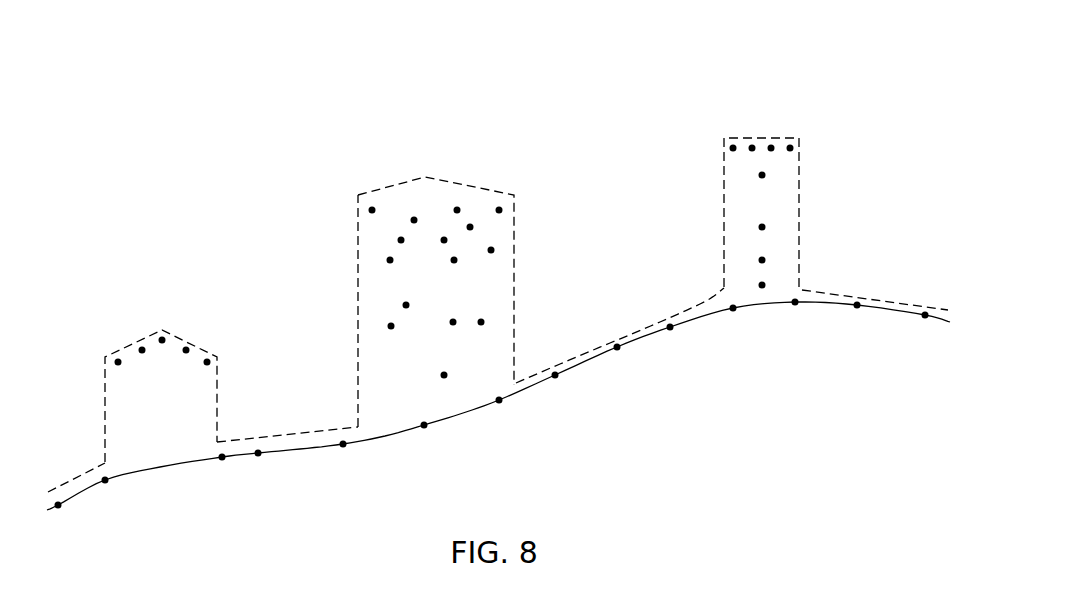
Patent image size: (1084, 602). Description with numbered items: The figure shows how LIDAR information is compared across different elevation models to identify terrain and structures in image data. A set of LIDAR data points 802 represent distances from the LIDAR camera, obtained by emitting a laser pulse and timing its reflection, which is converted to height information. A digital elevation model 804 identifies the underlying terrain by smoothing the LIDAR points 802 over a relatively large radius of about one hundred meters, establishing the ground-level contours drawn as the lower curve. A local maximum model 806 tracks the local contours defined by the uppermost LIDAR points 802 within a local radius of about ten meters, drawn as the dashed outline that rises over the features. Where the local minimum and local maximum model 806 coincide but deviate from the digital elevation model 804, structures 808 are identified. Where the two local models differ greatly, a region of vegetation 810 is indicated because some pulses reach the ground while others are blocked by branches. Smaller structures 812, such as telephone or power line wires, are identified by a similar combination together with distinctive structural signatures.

The LIDAR data points 802 is at (387, 261).
The digital elevation model 804 is at (628, 345).
The local maximum model 806 is at (358, 212).
The structures 808 is at (160, 322).
The region of vegetation 810 is at (425, 176).
The smaller structures 812 is at (762, 135).